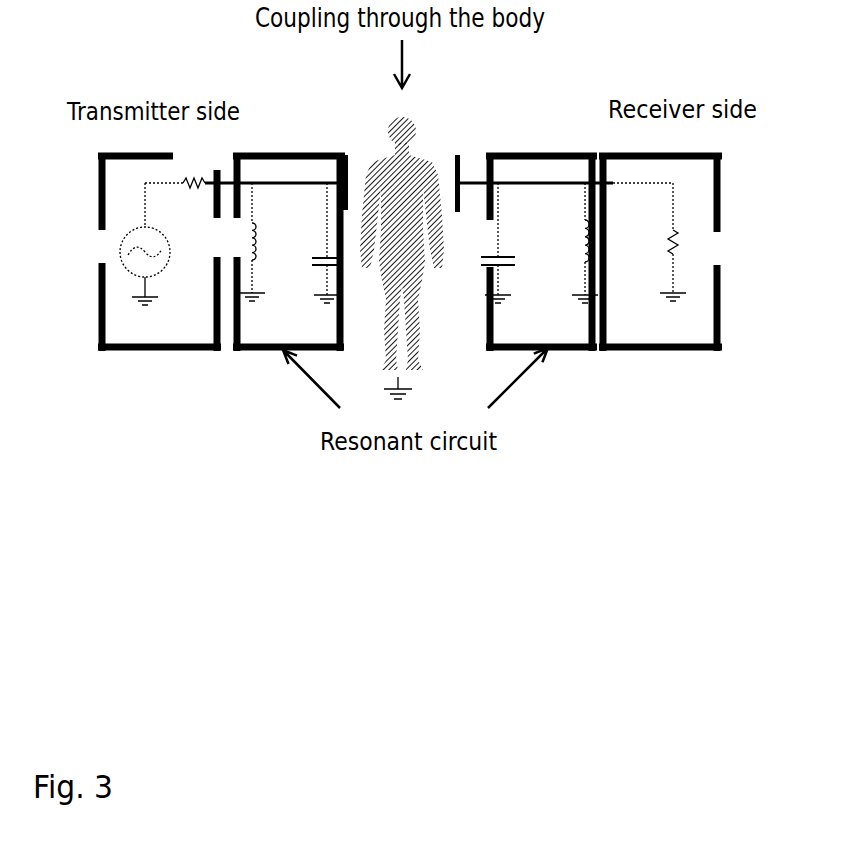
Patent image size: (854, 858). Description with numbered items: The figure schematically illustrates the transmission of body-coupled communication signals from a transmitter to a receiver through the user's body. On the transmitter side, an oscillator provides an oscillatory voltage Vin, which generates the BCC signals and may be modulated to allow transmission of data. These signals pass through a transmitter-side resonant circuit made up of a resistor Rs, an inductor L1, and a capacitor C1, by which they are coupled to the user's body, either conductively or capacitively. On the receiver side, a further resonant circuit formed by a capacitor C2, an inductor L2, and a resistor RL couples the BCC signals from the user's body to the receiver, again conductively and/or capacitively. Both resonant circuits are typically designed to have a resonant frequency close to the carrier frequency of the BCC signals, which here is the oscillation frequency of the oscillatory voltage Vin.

The oscillatory voltage Vin is at (134, 244).
The resistor Rs is at (196, 164).
The inductor L1 is at (244, 242).
The capacitor C1 is at (314, 243).
The capacitor C2 is at (491, 243).
The inductor L2 is at (574, 243).
The resistor RL is at (686, 265).